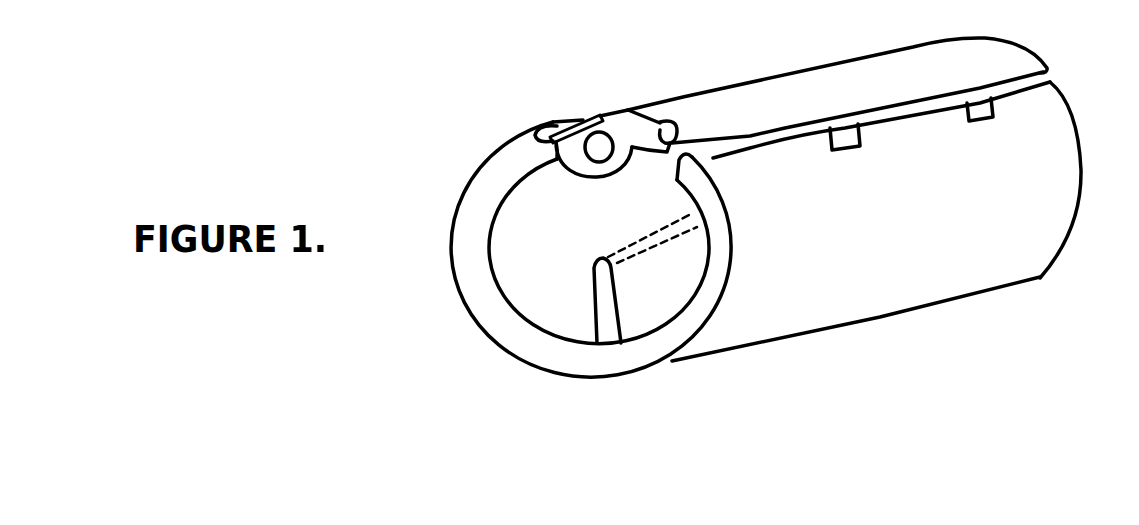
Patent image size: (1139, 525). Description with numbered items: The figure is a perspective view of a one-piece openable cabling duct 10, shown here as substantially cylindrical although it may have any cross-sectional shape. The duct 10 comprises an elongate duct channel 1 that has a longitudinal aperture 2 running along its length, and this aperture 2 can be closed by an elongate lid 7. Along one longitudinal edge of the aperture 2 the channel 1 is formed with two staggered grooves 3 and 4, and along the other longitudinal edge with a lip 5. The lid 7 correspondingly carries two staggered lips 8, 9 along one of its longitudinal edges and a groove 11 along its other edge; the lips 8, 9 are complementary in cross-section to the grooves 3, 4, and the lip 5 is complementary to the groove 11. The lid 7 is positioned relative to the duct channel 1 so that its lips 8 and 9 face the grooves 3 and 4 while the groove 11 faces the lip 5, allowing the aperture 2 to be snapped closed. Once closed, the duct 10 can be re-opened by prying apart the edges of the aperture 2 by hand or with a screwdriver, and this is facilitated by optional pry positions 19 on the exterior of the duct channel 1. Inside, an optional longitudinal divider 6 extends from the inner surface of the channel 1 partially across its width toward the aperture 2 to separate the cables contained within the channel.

The duct channel 1 is at (1040, 250).
The longitudinal aperture 2 is at (640, 157).
The groove 3 is at (538, 138).
The groove 4 is at (560, 150).
The lip 5 is at (713, 172).
The longitudinal divider 6 is at (608, 293).
The elongate lid 7 is at (987, 60).
The lip 8 is at (577, 123).
The lip 9 is at (627, 113).
The one-piece openable duct 10 is at (957, 263).
The groove 11 is at (680, 119).
The pry position 19 is at (852, 157).